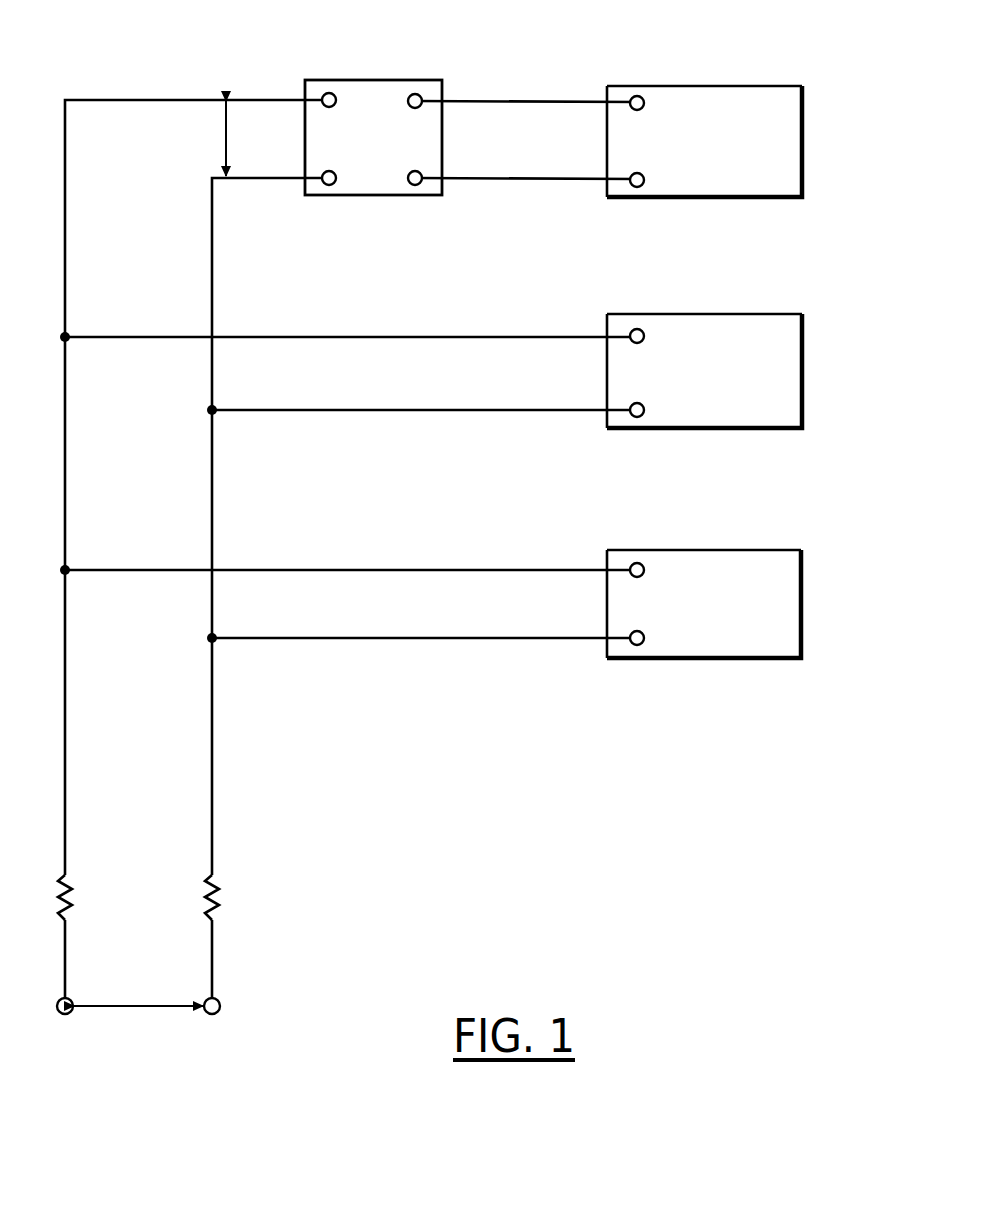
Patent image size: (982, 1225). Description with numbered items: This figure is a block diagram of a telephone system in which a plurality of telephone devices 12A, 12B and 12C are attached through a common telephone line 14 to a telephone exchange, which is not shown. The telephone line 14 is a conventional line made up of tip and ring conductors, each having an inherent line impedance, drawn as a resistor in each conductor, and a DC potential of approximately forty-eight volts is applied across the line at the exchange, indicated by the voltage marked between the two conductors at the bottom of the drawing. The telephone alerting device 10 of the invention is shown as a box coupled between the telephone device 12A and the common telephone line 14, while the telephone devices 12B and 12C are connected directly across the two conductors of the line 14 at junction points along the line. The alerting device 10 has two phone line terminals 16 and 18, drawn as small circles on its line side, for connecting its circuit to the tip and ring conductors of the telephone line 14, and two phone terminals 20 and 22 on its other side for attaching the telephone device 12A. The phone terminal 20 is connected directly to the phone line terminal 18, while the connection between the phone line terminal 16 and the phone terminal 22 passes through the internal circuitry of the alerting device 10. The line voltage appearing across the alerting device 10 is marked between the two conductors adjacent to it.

The telephone alerting device 10 is at (374, 80).
The telephone device 12A is at (804, 128).
The telephone device 12B is at (804, 370).
The telephone device 12C is at (803, 598).
The common telephone line 14 is at (65, 672).
The phone line terminal 16 is at (325, 93).
The phone line terminal 18 is at (329, 186).
The phone terminal 20 is at (416, 186).
The phone terminal 22 is at (417, 93).